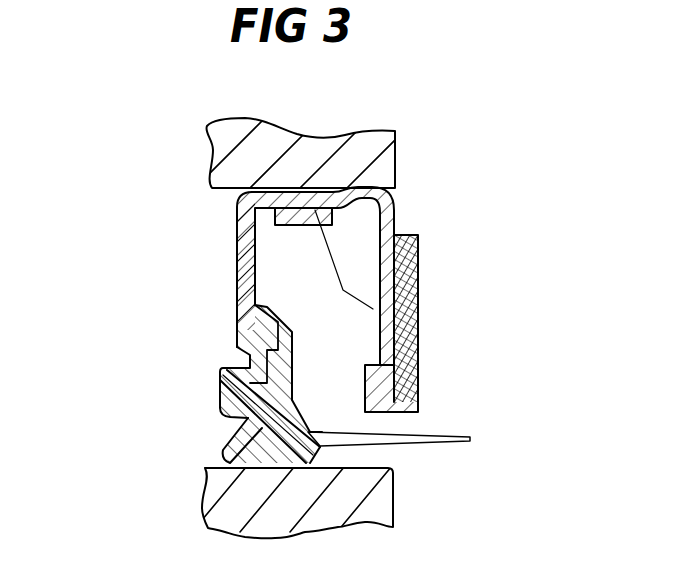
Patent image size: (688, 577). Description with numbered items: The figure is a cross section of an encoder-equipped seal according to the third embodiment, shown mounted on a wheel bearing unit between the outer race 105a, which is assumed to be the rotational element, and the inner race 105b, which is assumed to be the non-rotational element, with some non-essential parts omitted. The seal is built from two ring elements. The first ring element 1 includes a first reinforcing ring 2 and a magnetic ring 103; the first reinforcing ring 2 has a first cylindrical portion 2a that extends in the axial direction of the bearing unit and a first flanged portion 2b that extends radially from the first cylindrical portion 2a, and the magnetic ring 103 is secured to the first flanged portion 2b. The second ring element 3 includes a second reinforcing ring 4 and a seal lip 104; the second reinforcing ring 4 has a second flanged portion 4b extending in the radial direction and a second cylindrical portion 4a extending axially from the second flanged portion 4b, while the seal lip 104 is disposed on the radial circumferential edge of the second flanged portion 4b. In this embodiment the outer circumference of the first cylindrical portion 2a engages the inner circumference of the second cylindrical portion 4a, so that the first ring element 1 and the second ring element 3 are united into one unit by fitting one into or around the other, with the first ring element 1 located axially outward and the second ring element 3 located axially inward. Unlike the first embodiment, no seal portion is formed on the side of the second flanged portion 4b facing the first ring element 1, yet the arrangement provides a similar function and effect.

The first ring element 1 is at (429, 243).
The magnetic ring 103 is at (418, 259).
The first reinforcing ring 2 is at (469, 317).
The first cylindrical portion 2a is at (418, 353).
The first flanged portion 2b is at (394, 385).
The second ring element 3 is at (206, 395).
The second reinforcing ring 4 is at (211, 325).
The second cylindrical portion 4a is at (236, 216).
The second flanged portion 4b is at (237, 286).
The seal lip 104 is at (420, 439).
The outer race 105a is at (242, 173).
The inner race 105b is at (236, 524).